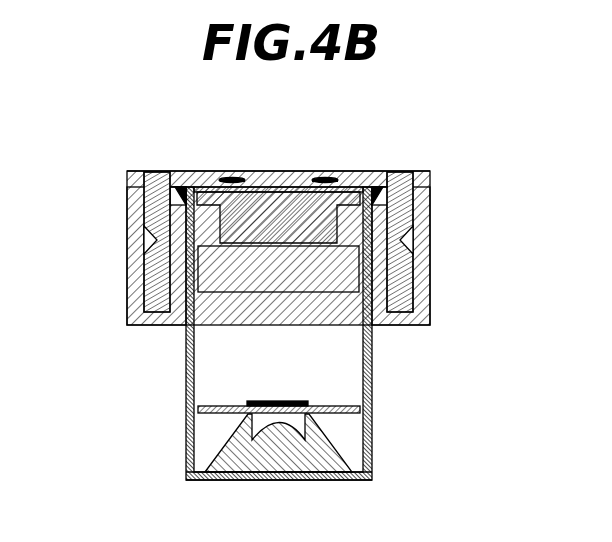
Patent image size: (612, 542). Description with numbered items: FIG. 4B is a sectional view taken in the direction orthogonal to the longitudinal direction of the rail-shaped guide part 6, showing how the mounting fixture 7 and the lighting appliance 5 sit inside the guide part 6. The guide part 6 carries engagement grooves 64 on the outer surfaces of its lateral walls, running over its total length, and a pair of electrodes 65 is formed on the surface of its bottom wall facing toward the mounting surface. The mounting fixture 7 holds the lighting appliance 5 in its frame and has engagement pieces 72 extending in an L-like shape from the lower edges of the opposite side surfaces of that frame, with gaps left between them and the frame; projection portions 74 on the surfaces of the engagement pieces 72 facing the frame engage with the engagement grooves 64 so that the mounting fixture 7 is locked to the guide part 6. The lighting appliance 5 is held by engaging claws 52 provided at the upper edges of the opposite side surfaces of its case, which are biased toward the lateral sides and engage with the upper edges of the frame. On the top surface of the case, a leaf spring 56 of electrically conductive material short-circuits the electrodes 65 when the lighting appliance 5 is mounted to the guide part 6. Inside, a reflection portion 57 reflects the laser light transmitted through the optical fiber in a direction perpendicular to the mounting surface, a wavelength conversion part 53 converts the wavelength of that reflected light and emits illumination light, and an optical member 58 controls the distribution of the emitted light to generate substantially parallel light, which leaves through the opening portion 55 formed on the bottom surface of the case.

The lighting appliance 5 is at (176, 406).
The guide part 6 is at (358, 166).
The mounting fixture 7 is at (120, 201).
The engaging claws 52 is at (182, 197).
The wavelength conversion part 53 is at (309, 397).
The opening portion 55 is at (325, 482).
The leaf spring 56 is at (225, 178).
The reflection portion 57 is at (255, 282).
The optical member 58 is at (327, 455).
The engagement grooves 64 is at (156, 241).
The electrodes 65 is at (238, 177).
The engagement pieces 72 is at (430, 202).
The projection portions 74 is at (153, 250).